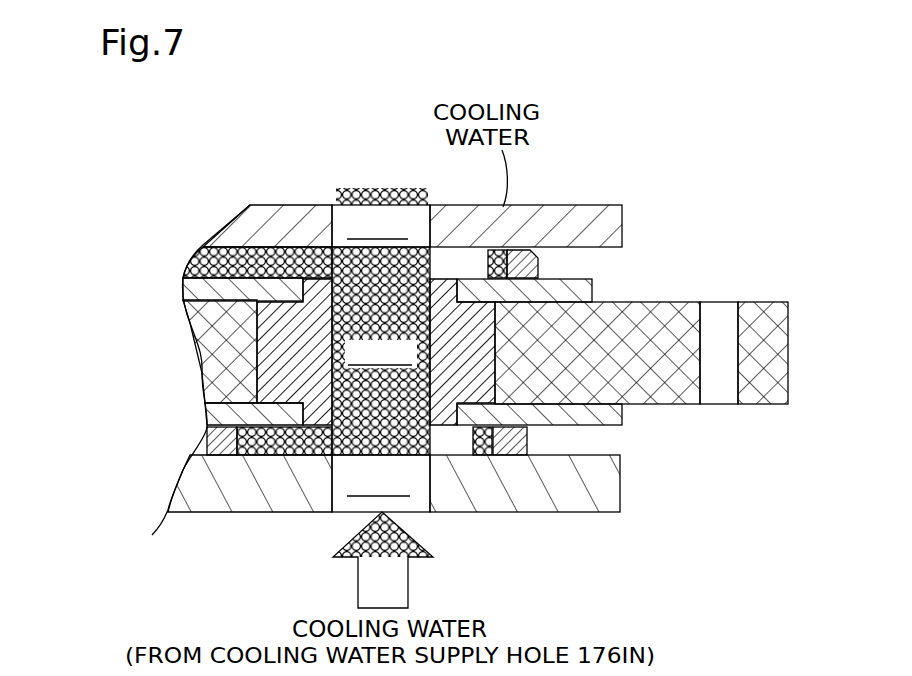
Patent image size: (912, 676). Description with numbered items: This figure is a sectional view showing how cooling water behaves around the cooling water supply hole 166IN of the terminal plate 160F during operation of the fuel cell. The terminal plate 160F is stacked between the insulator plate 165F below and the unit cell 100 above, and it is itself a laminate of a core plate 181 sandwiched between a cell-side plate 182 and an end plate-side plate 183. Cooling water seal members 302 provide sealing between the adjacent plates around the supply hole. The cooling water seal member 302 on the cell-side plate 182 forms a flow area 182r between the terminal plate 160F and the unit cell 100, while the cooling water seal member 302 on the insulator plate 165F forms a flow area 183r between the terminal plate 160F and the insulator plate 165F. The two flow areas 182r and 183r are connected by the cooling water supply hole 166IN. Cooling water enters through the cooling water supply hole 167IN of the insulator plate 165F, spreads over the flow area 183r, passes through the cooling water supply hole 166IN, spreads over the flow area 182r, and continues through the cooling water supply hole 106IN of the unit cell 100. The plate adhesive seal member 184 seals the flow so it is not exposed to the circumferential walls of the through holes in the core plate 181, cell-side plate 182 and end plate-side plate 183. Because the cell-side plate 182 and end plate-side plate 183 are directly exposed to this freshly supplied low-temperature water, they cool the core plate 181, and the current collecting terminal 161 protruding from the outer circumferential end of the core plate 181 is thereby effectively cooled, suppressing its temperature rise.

The unit cell 100 is at (563, 225).
The terminal plate 160F is at (133, 283).
The current collecting terminal 161 is at (740, 406).
The insulator plate 165F is at (283, 511).
The core plate 181 is at (183, 323).
The cell-side plate 182 is at (185, 280).
The flow area 182r is at (468, 264).
The end plate-side plate 183 is at (580, 400).
The flow area 183r is at (454, 441).
The plate adhesive seal member 184 is at (305, 325).
The cooling water seal member 302 is at (540, 268).
The cooling water supply hole 106IN is at (381, 226).
The cooling water supply hole 166IN is at (381, 351).
The cooling water supply hole 167IN is at (381, 483).